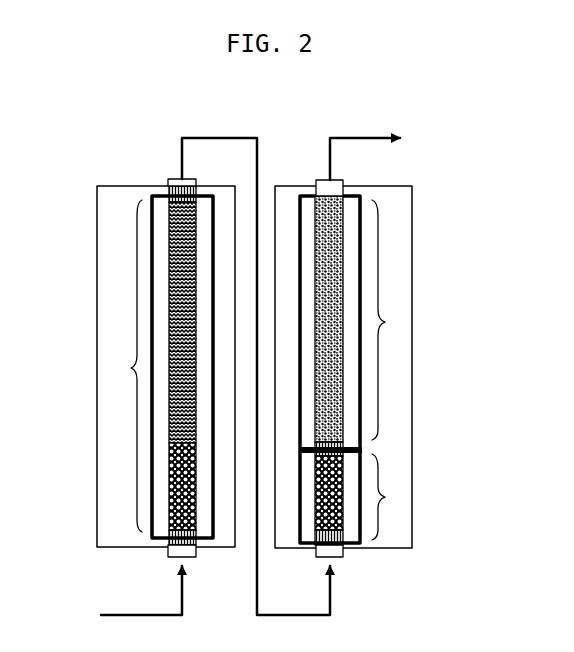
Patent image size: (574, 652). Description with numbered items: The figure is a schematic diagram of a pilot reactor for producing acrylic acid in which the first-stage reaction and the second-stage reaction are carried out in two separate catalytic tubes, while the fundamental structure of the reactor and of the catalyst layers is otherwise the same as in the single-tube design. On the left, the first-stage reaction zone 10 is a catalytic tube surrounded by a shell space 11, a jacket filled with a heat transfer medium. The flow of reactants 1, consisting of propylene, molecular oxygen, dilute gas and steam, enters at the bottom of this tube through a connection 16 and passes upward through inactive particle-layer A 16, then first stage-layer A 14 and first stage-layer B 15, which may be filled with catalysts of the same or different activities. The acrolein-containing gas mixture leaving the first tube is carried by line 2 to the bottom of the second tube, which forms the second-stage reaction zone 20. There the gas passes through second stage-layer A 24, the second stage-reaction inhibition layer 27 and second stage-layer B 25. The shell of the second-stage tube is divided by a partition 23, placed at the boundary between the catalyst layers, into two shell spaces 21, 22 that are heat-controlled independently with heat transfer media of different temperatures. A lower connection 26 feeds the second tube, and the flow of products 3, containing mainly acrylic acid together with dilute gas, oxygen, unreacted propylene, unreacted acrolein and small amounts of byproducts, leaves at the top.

The flow of reactants 1 is at (135, 594).
The intermediate stream 2 is at (256, 369).
The flow of products 3 is at (365, 152).
The first-stage reaction zone 10 is at (158, 366).
The shell space 11 is at (160, 367).
The first stage-layer A 14 is at (162, 493).
The first stage-layer B 15 is at (168, 342).
The inactive particle-layer A 16 is at (168, 541).
The second-stage reaction zone 20 is at (354, 367).
The shell space 21 is at (390, 497).
The shell space 22 is at (354, 369).
The partition 23 is at (364, 451).
The second stage-layer A 24 is at (346, 481).
The second stage-layer B 25 is at (348, 345).
The bottom connector 26 is at (348, 545).
The second stage-reaction inhibition layer 27 is at (347, 445).